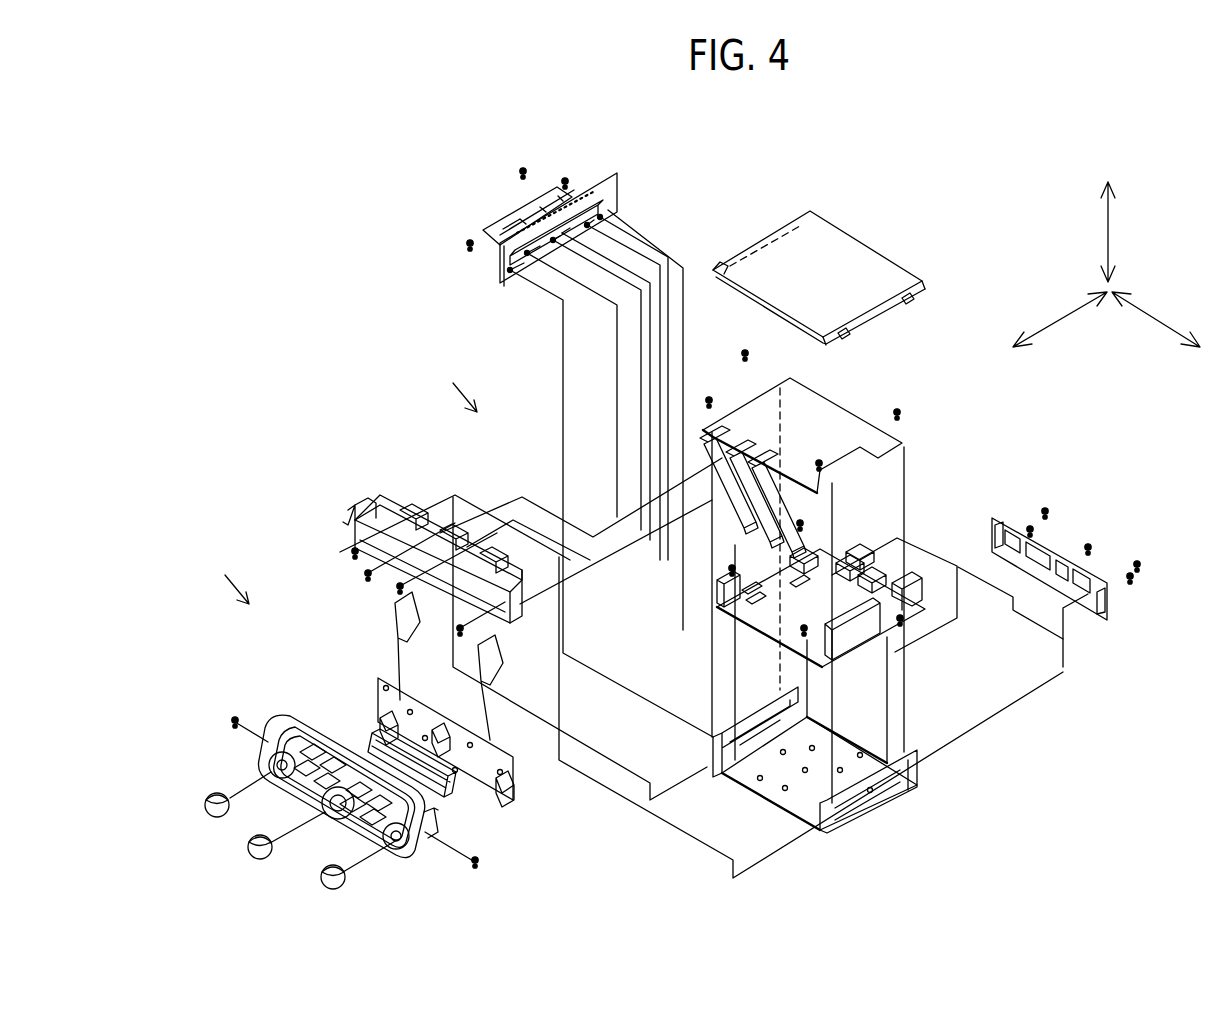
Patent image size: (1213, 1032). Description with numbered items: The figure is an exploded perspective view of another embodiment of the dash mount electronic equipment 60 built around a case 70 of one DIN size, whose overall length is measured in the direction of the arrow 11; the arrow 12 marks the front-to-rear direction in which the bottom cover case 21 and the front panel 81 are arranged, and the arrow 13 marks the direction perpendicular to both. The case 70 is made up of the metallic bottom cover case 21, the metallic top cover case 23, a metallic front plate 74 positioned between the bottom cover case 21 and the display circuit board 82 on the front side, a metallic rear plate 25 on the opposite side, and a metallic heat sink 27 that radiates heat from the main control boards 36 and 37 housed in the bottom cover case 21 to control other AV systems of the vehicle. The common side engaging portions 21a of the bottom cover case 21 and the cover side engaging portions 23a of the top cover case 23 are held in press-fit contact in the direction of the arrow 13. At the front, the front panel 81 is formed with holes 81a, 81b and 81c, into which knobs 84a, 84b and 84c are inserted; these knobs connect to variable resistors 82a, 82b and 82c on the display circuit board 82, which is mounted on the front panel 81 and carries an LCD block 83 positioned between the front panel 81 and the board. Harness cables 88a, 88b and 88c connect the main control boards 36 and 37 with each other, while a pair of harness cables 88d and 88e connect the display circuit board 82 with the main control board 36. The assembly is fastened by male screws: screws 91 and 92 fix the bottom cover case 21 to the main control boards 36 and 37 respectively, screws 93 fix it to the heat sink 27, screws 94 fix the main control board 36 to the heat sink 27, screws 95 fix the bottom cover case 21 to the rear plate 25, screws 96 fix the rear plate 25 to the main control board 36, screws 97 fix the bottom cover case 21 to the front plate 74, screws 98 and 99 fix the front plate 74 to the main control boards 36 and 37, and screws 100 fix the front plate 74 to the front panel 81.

The arrow 11 is at (1106, 240).
The arrow 12 is at (1063, 318).
The arrow 13 is at (1177, 320).
The bottom cover case 21 is at (840, 820).
The common side engaging portions 21a is at (742, 718).
The top cover case 23 is at (827, 234).
The cover side engaging portions 23a is at (772, 247).
The rear plate 25 is at (1098, 625).
The heat sink 27 is at (612, 175).
The main control board 36 is at (716, 600).
The main control board 37 is at (868, 455).
The electronic equipment 60 is at (222, 573).
The case 70 is at (448, 387).
The front plate 74 is at (385, 496).
The front panel 81 is at (272, 727).
The hole 81a is at (270, 768).
The hole 81b is at (335, 818).
The hole 81c is at (395, 850).
The display circuit board 82 is at (513, 784).
The variable resistor 82a is at (380, 722).
The variable resistor 82b is at (437, 728).
The variable resistor 82c is at (502, 800).
The LCD block 83 is at (448, 795).
The knob 84a is at (210, 816).
The knob 84b is at (256, 860).
The knob 84c is at (330, 890).
The harness cable 88a is at (718, 436).
The harness cable 88b is at (745, 456).
The harness cable 88c is at (769, 466).
The harness cable 88d is at (398, 630).
The harness cable 88e is at (492, 664).
The male screw 91 is at (806, 520).
The male screw 92 is at (707, 398).
The male screw 93 is at (563, 182).
The male screw 94 is at (520, 172).
The male screw 95 is at (1046, 512).
The male screw 96 is at (1090, 548).
The male screw 97 is at (350, 552).
The male screw 98 is at (396, 590).
The male screw 99 is at (364, 576).
The male screw 100 is at (233, 718).